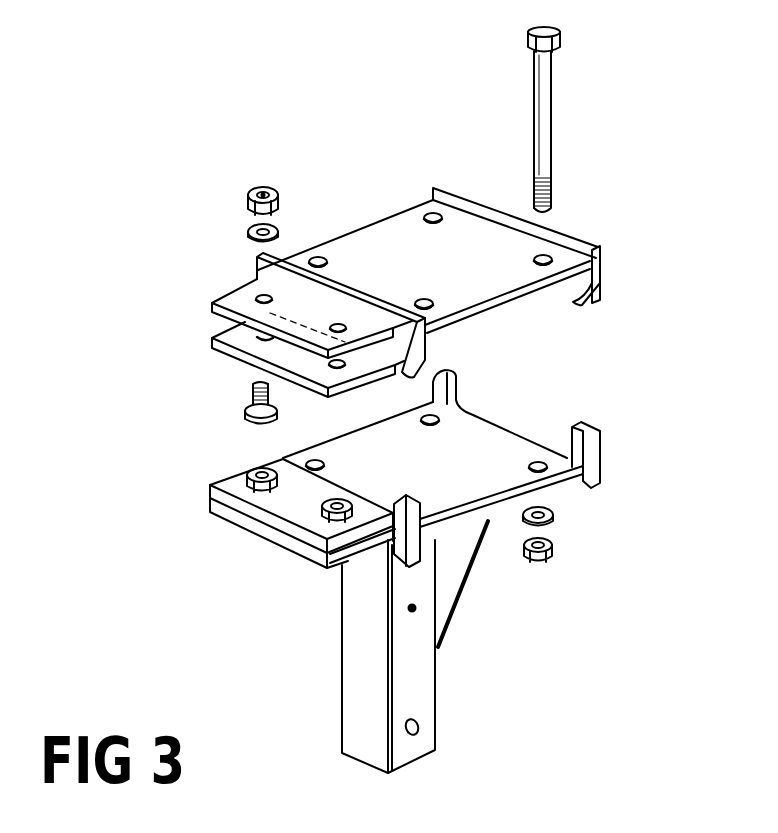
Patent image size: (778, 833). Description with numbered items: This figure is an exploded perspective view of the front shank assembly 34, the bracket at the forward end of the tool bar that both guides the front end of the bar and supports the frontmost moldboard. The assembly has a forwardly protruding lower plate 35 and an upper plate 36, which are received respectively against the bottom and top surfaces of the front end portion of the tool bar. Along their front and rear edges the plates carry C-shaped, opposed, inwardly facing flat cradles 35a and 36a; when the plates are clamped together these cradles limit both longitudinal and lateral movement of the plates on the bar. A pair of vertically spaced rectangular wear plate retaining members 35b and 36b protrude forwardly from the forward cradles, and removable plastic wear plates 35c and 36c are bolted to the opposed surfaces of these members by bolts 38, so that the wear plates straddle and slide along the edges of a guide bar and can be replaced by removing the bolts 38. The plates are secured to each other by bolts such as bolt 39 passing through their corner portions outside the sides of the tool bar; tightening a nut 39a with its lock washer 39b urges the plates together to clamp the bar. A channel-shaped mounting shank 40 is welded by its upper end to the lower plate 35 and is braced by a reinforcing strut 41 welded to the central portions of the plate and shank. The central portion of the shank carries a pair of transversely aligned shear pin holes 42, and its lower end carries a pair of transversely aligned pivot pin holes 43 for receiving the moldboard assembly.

The front shank assembly 34 is at (394, 241).
The lower plate 35 is at (501, 456).
The cradles of the lower plate 35a is at (596, 438).
The wear plate retaining member 35b is at (218, 516).
The wear plate 35c is at (233, 488).
The upper plate 36 is at (363, 195).
The cradles of the upper plate 36a is at (256, 270).
The wear plate retaining member 36b is at (218, 297).
The wear plate 36c is at (215, 338).
The bolts 38 is at (253, 395).
The bolt 39 is at (546, 110).
The nut 39a is at (554, 549).
The lock washer 39b is at (556, 518).
The mounting shank 40 is at (388, 656).
The reinforcing strut 41 is at (456, 570).
The shear pin holes 42 is at (420, 610).
The pivot pin holes 43 is at (419, 725).